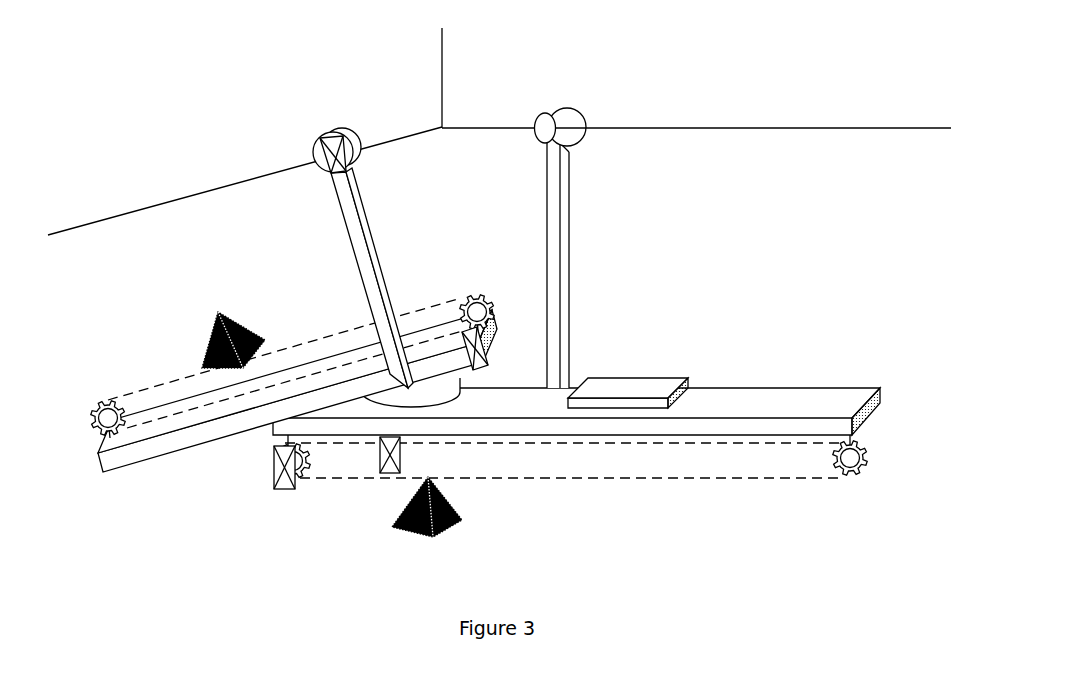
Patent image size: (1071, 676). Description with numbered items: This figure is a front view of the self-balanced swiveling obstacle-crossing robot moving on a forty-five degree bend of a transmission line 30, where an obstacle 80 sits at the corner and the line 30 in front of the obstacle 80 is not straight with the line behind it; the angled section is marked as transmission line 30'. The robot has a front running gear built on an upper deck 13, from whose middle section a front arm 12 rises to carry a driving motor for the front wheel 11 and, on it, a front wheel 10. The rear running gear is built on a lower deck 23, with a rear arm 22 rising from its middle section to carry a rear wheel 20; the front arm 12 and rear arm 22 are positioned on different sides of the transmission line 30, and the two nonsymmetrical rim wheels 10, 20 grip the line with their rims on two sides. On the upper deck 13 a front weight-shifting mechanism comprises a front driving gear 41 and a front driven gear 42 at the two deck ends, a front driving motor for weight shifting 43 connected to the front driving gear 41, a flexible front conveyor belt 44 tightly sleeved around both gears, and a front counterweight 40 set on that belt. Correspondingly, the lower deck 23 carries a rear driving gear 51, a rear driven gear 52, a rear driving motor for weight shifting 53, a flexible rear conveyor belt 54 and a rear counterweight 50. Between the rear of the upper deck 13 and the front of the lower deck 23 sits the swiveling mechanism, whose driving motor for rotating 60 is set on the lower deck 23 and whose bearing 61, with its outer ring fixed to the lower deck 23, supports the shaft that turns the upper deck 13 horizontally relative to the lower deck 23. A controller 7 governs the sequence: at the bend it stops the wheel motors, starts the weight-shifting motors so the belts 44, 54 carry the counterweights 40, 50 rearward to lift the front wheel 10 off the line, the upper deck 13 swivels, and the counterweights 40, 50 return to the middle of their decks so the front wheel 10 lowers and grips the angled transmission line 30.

The controller 7 is at (643, 388).
The front wheel 10 is at (335, 120).
The driving motor for the front wheel 11 is at (353, 176).
The front arm 12 is at (388, 262).
The upper deck 13 is at (182, 463).
The rear wheel 20 is at (585, 104).
The rear arm 22 is at (573, 213).
The lower deck 23 is at (808, 402).
The transmission line 30 is at (696, 78).
The inclined wall 30' is at (245, 175).
The front counterweight 40 is at (205, 343).
The front driving gear 41 is at (483, 292).
The front driven gear 42 is at (85, 407).
The front driving motor for weight shifting 43 is at (483, 372).
The flexible front conveyor belt 44 is at (317, 330).
The rear counterweight 50 is at (452, 535).
The rear driving gear 51 is at (300, 477).
The rear driven gear 52 is at (857, 482).
The rear driving motor for weight shifting 53 is at (278, 497).
The flexible rear conveyor belt 54 is at (655, 485).
The driving motor for rotating 60 is at (383, 480).
The bearing 61 is at (430, 393).
The obstacle 80 is at (450, 72).